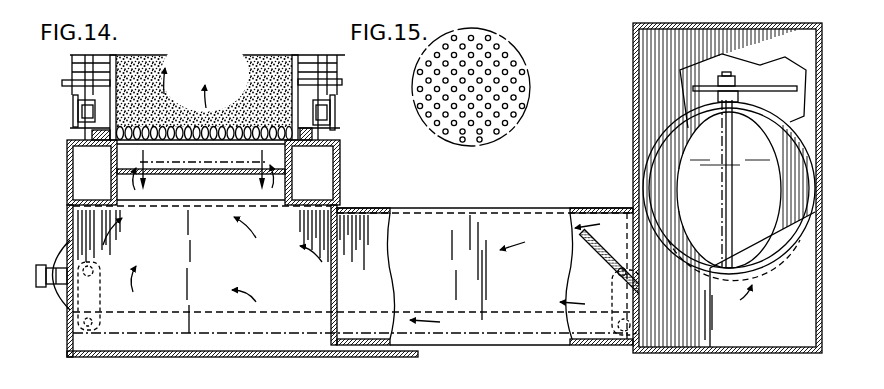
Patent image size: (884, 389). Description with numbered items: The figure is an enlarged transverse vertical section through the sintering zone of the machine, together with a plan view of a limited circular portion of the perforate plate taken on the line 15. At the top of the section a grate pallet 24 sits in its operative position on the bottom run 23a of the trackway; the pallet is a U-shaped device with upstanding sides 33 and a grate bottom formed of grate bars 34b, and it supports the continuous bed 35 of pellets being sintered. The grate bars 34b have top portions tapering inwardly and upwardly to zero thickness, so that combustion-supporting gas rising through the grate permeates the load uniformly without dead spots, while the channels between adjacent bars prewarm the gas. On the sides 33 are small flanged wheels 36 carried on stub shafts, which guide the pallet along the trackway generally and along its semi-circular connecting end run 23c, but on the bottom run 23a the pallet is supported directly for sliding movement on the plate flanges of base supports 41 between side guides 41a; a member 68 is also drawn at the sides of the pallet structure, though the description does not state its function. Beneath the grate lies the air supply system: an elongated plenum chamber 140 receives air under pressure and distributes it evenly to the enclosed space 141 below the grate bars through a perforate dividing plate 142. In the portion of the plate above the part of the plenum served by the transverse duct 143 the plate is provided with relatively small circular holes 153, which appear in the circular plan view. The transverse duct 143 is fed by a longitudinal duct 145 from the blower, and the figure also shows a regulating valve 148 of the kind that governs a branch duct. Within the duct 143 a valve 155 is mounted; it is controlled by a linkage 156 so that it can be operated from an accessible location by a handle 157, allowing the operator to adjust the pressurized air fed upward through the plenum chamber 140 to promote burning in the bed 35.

In FIG. 14, the section line 15— 15 is at (190, 165).
In FIG. 14, the grate pallet 24 is at (300, 70).
In FIG. 14, the upstanding sides 33 is at (86, 64).
In FIG. 14, the grate bars 34b is at (214, 118).
In FIG. 14, the continuous bed of pellets 35 is at (228, 56).
In FIG. 14, the flanged wheels 36 is at (72, 128).
In FIG. 14, the base supports 41 is at (67, 198).
In FIG. 14, the side guides 41a is at (70, 146).
In FIG. 14, the bolt 68 is at (62, 84).
In FIG. 14, the bottom run 23a is at (104, 146).
In FIG. 14, the semi-circular connecting end run 23c is at (73, 108).
In FIG. 14, the plenum chamber 140 is at (255, 204).
In FIG. 14, the enclosed space 141 is at (232, 141).
In FIG. 14, the perforate dividing plate 142 is at (172, 169).
In FIG. 15, the perforate dividing plate 142 is at (520, 68).
In FIG. 14, the transverse duct 143 is at (464, 208).
In FIG. 14, the longitudinal duct 145 is at (633, 108).
In FIG. 14, the regulating valve 148 is at (688, 128).
In FIG. 14, the circular holes 153 is at (205, 175).
In FIG. 15, the circular holes 153 is at (461, 134).
In FIG. 14, the valve 155 is at (652, 318).
In FIG. 14, the linkage 156 is at (422, 312).
In FIG. 14, the handle 157 is at (48, 266).